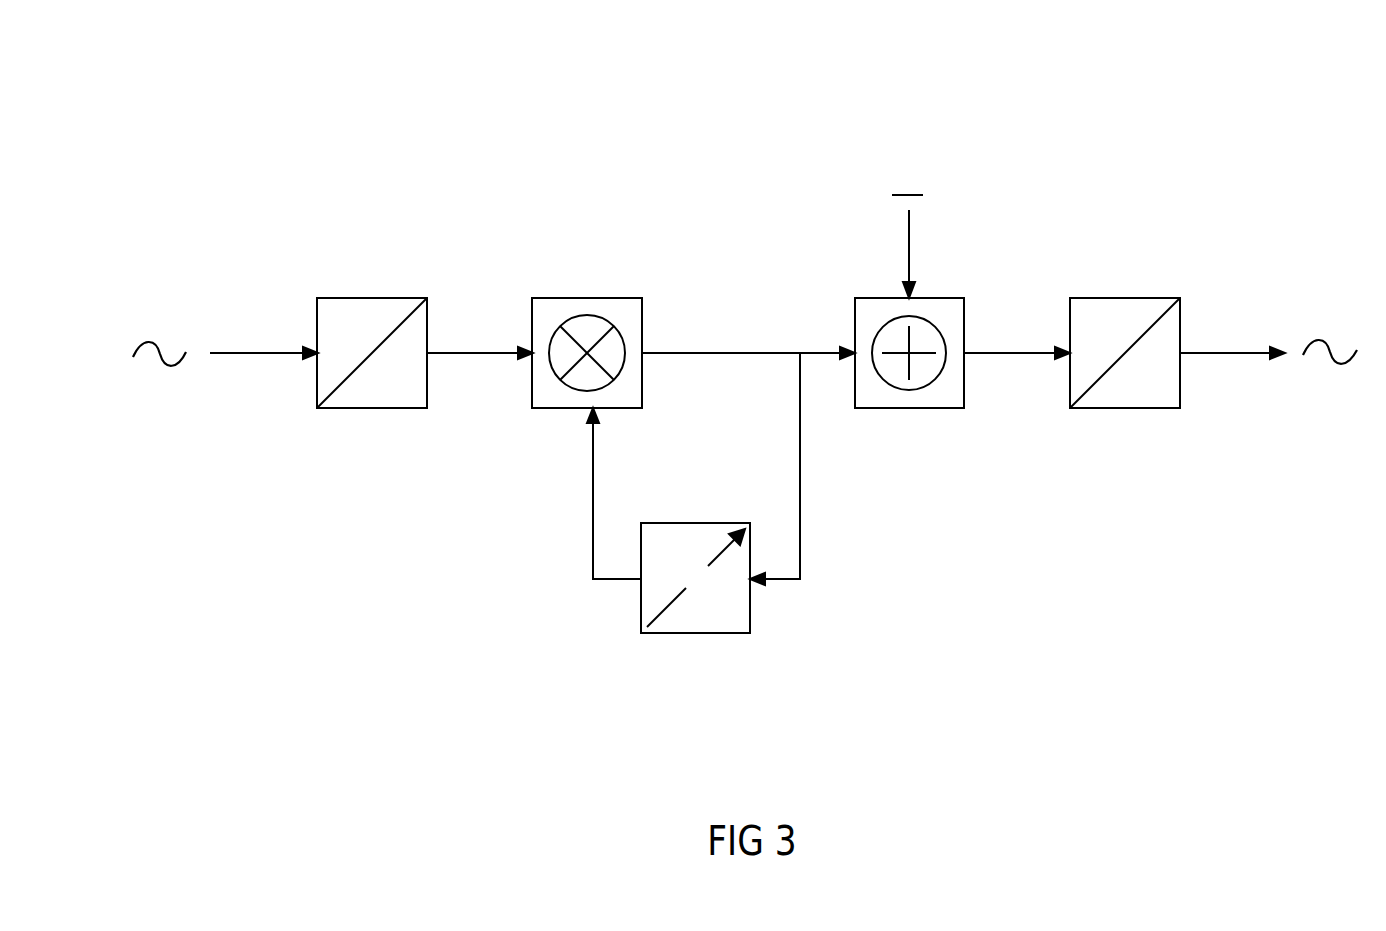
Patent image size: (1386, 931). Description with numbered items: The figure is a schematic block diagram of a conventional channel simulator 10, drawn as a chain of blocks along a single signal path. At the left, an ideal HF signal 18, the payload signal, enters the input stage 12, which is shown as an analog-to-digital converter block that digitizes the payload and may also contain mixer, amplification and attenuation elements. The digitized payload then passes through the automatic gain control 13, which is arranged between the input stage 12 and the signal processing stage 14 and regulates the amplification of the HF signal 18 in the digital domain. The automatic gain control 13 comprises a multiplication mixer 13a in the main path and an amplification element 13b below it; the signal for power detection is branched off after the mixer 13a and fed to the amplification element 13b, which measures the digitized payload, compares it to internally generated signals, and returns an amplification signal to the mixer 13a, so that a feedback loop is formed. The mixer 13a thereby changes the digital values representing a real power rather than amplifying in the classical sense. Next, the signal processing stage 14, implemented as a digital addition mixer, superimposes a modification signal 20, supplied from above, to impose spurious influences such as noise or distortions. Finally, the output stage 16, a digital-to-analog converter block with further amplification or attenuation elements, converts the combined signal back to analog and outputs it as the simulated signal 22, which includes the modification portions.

The channel simulator 10 is at (1264, 112).
The input stage 12 is at (368, 298).
The automatic gain control 13 is at (666, 537).
The multiplication mixer 13a is at (560, 409).
The amplification element 13b is at (695, 625).
The signal processing stage 14 is at (915, 409).
The output stage 16 is at (1118, 298).
The HF signal 18 is at (153, 340).
The modification signal 20 is at (905, 192).
The simulated signal 22 is at (1332, 330).